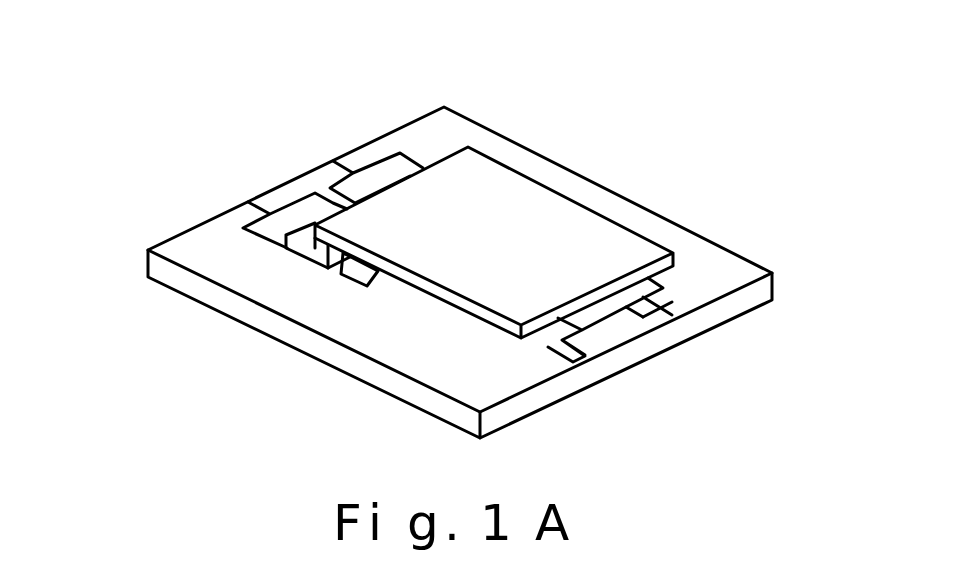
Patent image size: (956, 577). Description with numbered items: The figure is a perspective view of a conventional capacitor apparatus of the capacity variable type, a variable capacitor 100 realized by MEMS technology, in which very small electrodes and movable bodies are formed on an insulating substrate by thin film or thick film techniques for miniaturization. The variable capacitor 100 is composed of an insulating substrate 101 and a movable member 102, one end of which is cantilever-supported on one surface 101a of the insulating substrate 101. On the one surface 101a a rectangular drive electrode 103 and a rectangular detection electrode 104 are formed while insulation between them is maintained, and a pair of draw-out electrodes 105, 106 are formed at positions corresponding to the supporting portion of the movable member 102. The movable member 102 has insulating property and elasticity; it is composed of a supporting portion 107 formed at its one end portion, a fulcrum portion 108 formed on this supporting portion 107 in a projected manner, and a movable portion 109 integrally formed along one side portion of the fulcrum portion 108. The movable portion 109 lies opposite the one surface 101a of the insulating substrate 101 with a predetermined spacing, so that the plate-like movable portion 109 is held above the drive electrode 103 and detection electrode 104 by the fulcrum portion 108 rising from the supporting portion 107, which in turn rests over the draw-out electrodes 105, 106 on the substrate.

The variable capacitor 100 is at (445, 110).
The insulating substrate 101 is at (570, 176).
The one surface 101a is at (230, 270).
The movable member 102 is at (403, 428).
The drive electrode 103 is at (532, 347).
The detection electrode 104 is at (642, 294).
The draw-out electrode 105 is at (288, 213).
The draw-out electrode 106 is at (360, 183).
The supporting portion 107 is at (296, 248).
The fulcrum portion 108 is at (316, 248).
The movable portion 109 is at (388, 263).